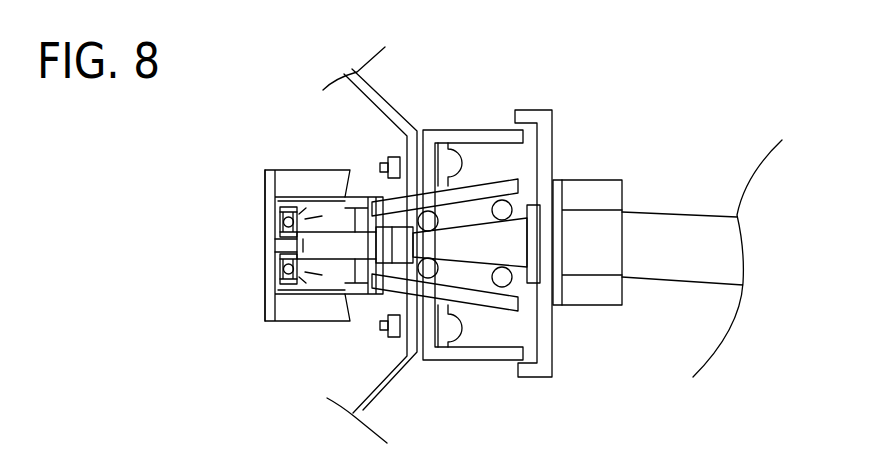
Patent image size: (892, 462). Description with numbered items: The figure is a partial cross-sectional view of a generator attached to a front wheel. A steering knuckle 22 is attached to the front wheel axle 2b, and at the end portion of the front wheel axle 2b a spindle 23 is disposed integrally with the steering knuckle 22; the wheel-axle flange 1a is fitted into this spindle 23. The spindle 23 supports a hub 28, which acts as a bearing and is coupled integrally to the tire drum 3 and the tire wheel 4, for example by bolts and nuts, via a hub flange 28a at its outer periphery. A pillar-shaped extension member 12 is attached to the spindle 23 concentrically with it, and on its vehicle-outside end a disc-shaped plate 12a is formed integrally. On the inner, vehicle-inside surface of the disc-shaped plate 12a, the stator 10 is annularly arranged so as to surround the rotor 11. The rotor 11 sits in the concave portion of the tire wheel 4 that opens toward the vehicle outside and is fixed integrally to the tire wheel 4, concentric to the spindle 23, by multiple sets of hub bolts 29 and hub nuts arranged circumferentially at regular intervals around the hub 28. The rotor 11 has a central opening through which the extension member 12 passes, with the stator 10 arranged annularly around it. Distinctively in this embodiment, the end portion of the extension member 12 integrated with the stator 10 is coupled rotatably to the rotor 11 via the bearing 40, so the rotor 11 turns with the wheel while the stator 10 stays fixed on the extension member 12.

The wheel-axle flange 1a is at (538, 378).
The front wheel axle 2b is at (717, 214).
The tire drum 3 is at (451, 130).
The tire wheel 4 is at (397, 387).
The stator 10 is at (292, 182).
The rotor 11 is at (278, 210).
The extension member 12 is at (339, 248).
The disc-shaped plate 12a is at (266, 180).
The steering knuckle 22 is at (600, 298).
The spindle 23 is at (488, 240).
The hub 28 is at (467, 187).
The hub flange 28a is at (463, 148).
The hub bolt 29 is at (384, 326).
The bearing 40 is at (275, 250).